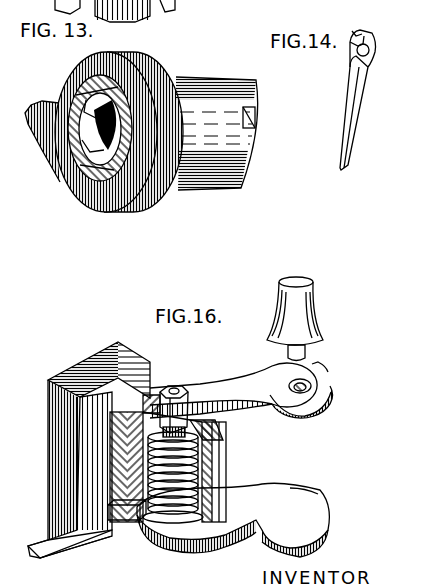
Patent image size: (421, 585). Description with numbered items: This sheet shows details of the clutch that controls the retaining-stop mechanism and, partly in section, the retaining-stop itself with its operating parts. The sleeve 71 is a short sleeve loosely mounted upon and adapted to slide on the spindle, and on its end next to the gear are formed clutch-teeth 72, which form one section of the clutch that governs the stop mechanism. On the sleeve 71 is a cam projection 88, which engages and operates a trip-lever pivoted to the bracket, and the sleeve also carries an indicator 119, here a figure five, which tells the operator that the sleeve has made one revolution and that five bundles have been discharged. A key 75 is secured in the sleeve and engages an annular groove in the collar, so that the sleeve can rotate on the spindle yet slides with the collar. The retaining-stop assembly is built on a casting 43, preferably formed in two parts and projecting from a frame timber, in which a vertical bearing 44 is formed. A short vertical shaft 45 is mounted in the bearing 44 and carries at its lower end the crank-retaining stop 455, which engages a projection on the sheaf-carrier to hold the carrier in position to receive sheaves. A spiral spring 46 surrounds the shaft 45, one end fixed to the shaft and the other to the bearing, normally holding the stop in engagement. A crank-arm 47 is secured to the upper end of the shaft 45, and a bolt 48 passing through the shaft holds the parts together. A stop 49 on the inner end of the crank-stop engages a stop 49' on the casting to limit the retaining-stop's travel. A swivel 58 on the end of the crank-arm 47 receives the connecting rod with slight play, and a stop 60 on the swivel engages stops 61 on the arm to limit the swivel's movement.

In FIG. 13, the sleeve 71 is at (217, 133).
In FIG. 13, the clutch-teeth 72 is at (83, 97).
In FIG. 13, the cam projection 88 is at (36, 104).
In FIG. 14, the key 75 is at (355, 112).
In FIG. 14, the indicator 119 is at (364, 34).
In FIG. 16, the swivel 58 is at (295, 311).
In FIG. 16, the stop 60 is at (268, 325).
In FIG. 16, the casting 43 is at (89, 450).
In FIG. 16, the vertical bearing 44 is at (226, 478).
In FIG. 16, the vertical shaft 45 is at (224, 438).
In FIG. 16, the spiral spring 46 is at (164, 497).
In FIG. 16, the crank-arm 47 is at (225, 387).
In FIG. 16, the bolt 48 is at (173, 389).
In FIG. 16, the stop 49 is at (233, 529).
In FIG. 16, the stop 49' is at (127, 528).
In FIG. 16, the stops 61 is at (281, 371).
In FIG. 16, the crank-retaining stop 455 is at (312, 501).